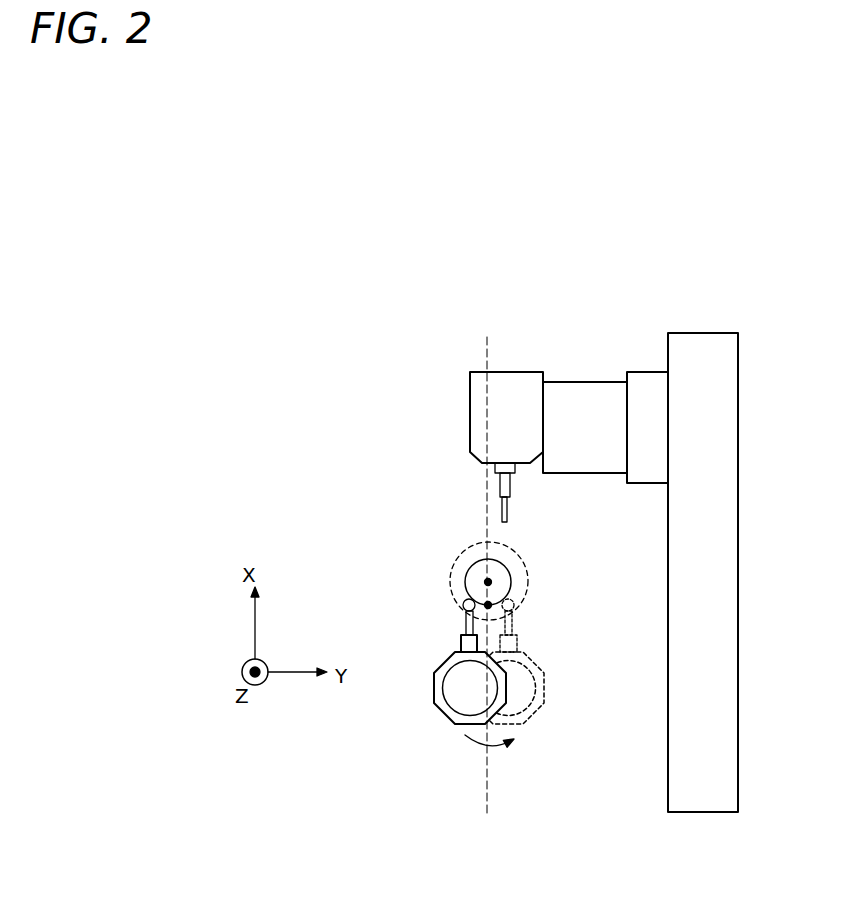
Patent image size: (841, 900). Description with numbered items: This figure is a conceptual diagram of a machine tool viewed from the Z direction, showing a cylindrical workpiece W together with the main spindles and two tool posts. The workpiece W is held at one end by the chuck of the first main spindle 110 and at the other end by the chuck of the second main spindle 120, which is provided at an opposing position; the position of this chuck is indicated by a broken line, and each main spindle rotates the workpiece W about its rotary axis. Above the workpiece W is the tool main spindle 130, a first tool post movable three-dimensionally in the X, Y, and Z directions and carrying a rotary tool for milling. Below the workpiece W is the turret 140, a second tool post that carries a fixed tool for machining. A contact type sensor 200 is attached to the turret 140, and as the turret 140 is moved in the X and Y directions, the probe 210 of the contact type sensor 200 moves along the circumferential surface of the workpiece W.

The tool main spindle 130 is at (525, 395).
The first main spindle 110 is at (431, 538).
The second main spindle 120 is at (455, 560).
The workpiece W is at (500, 587).
The probe 210 is at (462, 607).
The contact type sensor 200 is at (461, 637).
The turret 140 is at (470, 690).